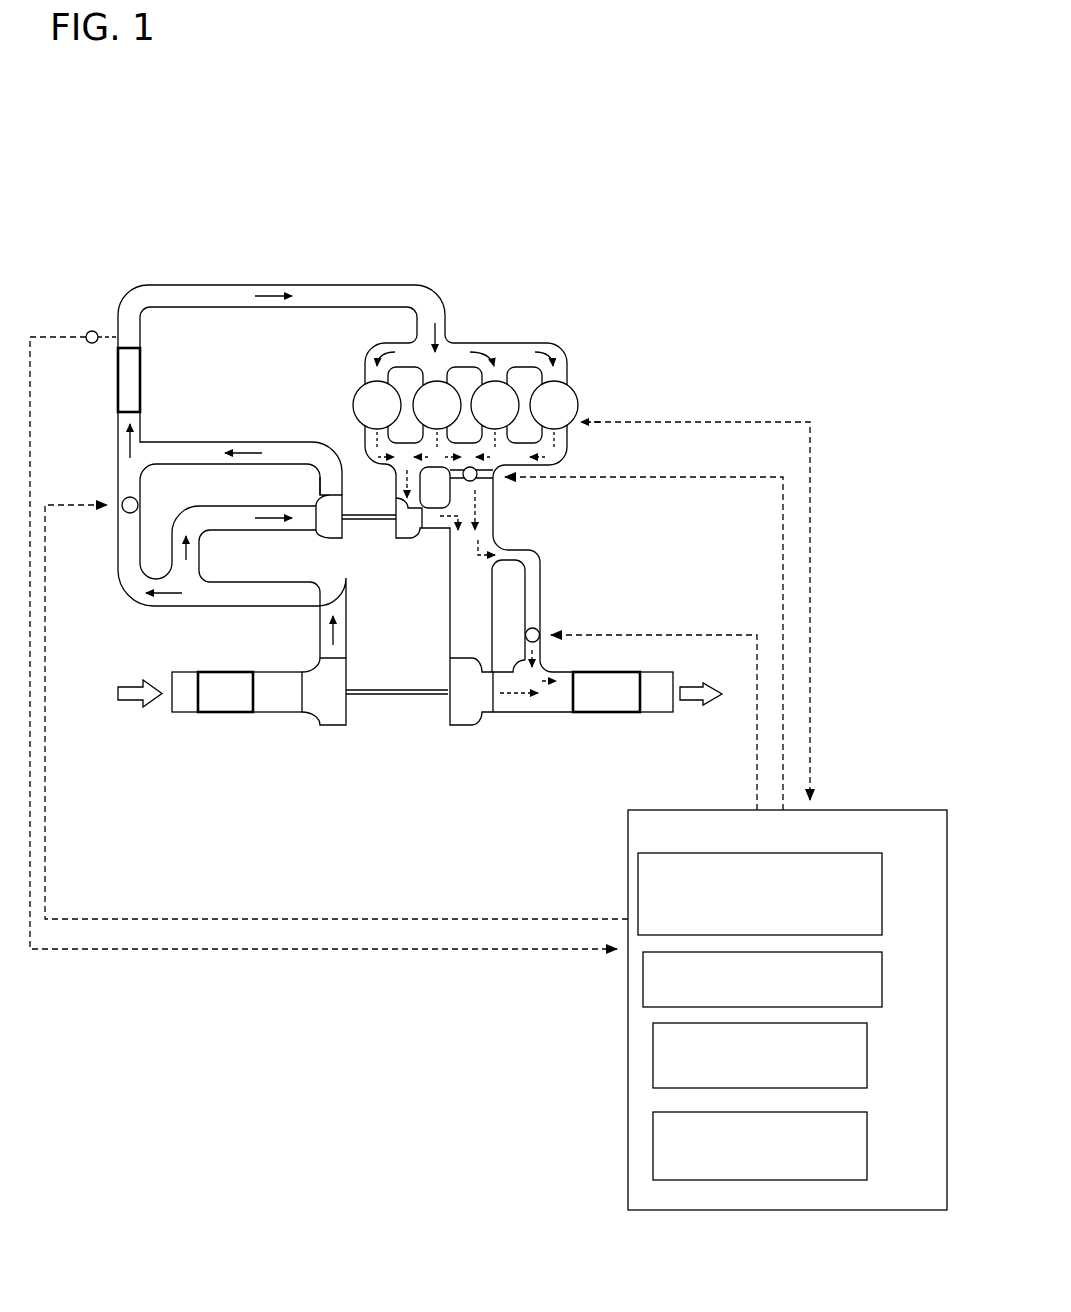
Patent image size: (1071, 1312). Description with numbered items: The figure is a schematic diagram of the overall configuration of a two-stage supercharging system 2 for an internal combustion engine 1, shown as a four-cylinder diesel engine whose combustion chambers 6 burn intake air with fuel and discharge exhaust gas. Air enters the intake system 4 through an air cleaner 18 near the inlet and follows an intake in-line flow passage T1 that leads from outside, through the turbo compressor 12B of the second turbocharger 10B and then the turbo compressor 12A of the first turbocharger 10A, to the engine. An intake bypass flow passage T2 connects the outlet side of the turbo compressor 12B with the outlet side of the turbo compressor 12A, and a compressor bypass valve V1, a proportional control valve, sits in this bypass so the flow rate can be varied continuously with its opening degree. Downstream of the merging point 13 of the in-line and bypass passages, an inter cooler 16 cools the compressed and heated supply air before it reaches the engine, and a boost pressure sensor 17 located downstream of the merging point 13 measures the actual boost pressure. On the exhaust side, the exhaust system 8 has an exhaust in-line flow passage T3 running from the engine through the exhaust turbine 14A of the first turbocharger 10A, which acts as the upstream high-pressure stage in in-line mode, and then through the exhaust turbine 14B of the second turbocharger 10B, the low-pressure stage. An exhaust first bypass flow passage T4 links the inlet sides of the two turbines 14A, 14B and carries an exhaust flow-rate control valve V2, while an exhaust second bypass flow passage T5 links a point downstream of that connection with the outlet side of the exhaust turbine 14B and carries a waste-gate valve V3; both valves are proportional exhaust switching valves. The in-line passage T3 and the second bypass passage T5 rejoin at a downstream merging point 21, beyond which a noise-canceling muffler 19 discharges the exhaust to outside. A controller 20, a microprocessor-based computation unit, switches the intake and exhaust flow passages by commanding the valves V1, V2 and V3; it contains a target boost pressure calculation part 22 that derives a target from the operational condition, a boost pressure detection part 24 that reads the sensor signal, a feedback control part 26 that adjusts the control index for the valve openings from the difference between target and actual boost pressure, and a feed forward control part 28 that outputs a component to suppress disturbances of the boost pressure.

The internal combustion engine 1 is at (692, 304).
The supercharging system 2 is at (580, 336).
The intake system 4 is at (104, 584).
The combustion chamber 6 is at (580, 395).
The exhaust system 8 is at (646, 590).
The first turbocharger 10A is at (372, 550).
The second turbocharger 10B is at (390, 724).
The turbo compressor 12A is at (327, 540).
The turbo compressor 12B is at (313, 716).
The downstream merging point 13 is at (118, 440).
The exhaust turbine 14A is at (419, 538).
The exhaust turbine 14B is at (482, 715).
The inter cooler 16 is at (143, 378).
The boost pressure sensor 17 is at (92, 331).
The air cleaner 18 is at (222, 713).
The noise-canceling muffler 19 is at (598, 713).
The controller 20 is at (910, 810).
The downstream merging point 21 is at (532, 713).
The target boost pressure calculation part 22 is at (882, 893).
The boost pressure detection part 24 is at (882, 973).
The feedback control part 26 is at (867, 1053).
The feed forward control part 28 is at (867, 1143).
The intake in-line flow passage T1 is at (258, 532).
The intake bypass flow passage T2 is at (118, 524).
The exhaust in-line flow passage T3 is at (442, 624).
The exhaust first bypass flow passage T4 is at (496, 510).
The exhaust second bypass flow passage T5 is at (541, 587).
The compressor bypass valve V1 is at (123, 498).
The exhaust flow-rate control valve V2 is at (478, 480).
The waste-gate valve V3 is at (540, 630).